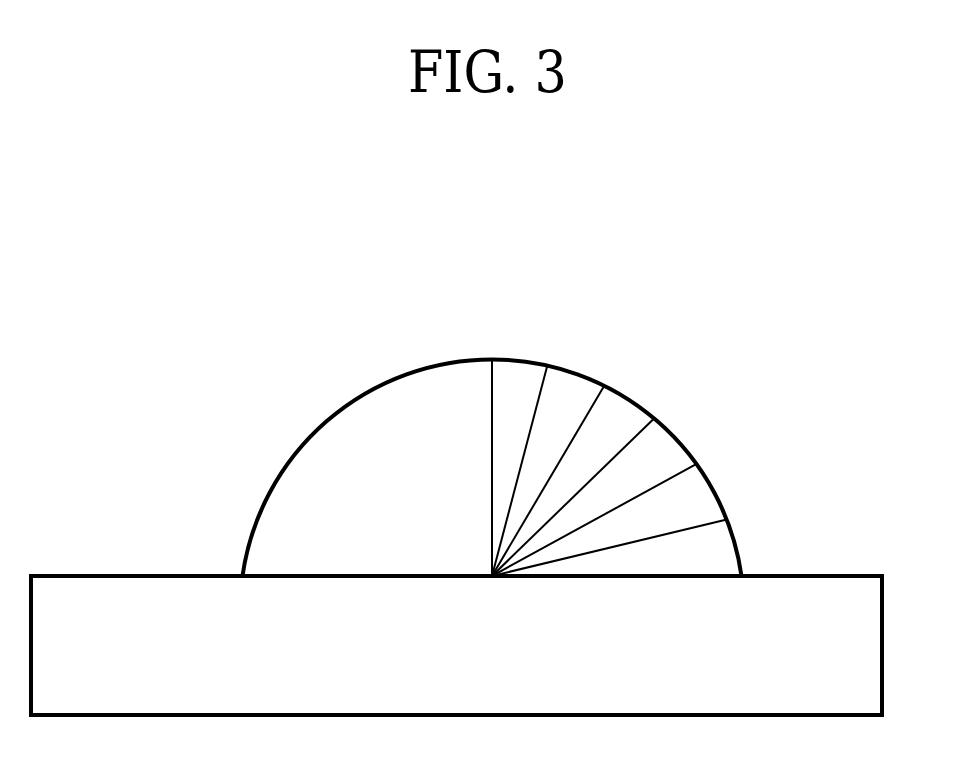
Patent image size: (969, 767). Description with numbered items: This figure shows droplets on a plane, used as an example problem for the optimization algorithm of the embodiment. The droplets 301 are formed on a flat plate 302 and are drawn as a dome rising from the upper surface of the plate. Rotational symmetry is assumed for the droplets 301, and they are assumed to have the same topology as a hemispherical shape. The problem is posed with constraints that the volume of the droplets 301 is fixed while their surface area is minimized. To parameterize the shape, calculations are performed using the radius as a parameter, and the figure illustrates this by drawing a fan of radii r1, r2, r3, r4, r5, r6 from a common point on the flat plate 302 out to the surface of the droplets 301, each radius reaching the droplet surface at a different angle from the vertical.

The droplets 301 is at (278, 470).
The flat plate 302 is at (101, 576).
The first radius r1 is at (497, 445).
The second radius r2 is at (532, 449).
The third radius r3 is at (562, 458).
The fourth radius r4 is at (589, 475).
The fifth radius r5 is at (613, 498).
The sixth radius r6 is at (630, 530).